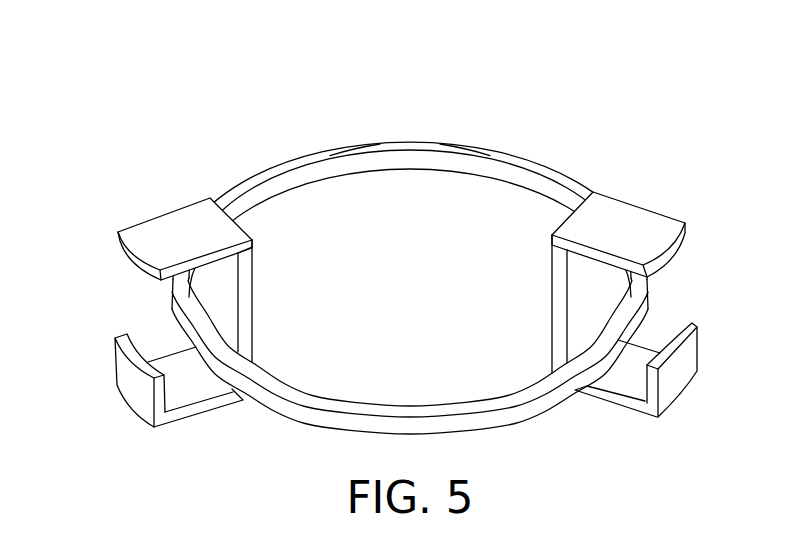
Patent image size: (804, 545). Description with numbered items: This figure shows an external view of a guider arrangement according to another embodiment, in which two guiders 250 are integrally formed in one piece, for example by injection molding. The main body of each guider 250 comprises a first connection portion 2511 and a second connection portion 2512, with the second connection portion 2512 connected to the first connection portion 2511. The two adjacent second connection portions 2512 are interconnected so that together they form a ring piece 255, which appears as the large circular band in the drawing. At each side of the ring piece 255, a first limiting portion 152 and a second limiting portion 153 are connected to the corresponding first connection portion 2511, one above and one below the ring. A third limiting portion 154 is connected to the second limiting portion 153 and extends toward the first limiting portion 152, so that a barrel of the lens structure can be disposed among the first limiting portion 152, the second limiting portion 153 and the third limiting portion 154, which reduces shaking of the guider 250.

The ring piece 255 is at (312, 75).
The second connection portion 2512 is at (351, 158).
The guider 250 is at (407, 287).
The first limiting portion 152 is at (177, 228).
The first connection portion 2511 is at (215, 303).
The second limiting portion 153 is at (187, 413).
The third limiting portion 154 is at (123, 378).